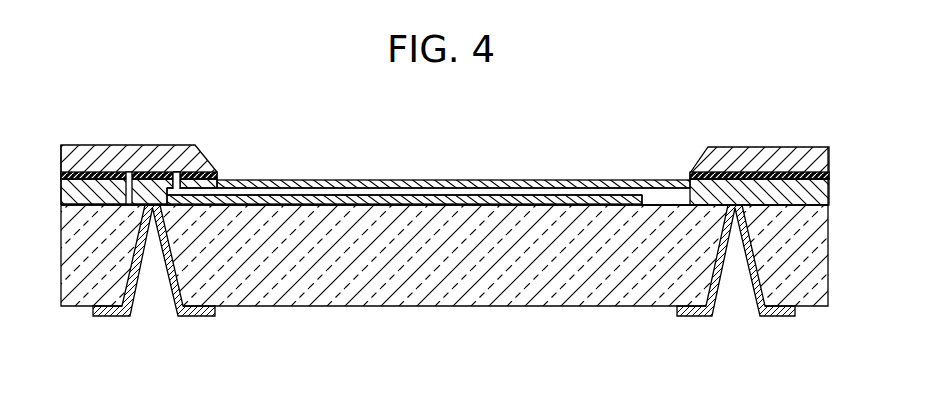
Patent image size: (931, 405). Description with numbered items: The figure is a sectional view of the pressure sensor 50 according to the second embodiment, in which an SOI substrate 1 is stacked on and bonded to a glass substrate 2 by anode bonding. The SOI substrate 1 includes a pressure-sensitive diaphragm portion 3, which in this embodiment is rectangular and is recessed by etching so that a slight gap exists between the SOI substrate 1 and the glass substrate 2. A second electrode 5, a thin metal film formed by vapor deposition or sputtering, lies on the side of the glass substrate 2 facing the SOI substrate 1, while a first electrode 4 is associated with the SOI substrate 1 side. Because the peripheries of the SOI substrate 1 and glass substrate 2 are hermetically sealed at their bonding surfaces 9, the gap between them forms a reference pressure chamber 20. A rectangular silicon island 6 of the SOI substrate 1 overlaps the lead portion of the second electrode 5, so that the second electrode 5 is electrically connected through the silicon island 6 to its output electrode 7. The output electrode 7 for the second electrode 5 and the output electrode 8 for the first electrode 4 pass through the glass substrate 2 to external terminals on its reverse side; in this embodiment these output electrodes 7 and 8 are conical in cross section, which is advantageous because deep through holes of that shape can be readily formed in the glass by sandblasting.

The SOI substrate 1 is at (836, 206).
The glass substrate 2 is at (836, 306).
The pressure-sensitive diaphragm portion 3 is at (453, 148).
The first electrode 4 is at (355, 180).
The second electrode 5 is at (451, 195).
The silicon island 6 is at (158, 187).
The output electrode 7 is at (154, 297).
The output electrode 8 is at (736, 297).
The bonding surfaces 9 is at (838, 206).
The reference pressure chamber 20 is at (650, 193).
The pressure sensor 50 is at (556, 142).